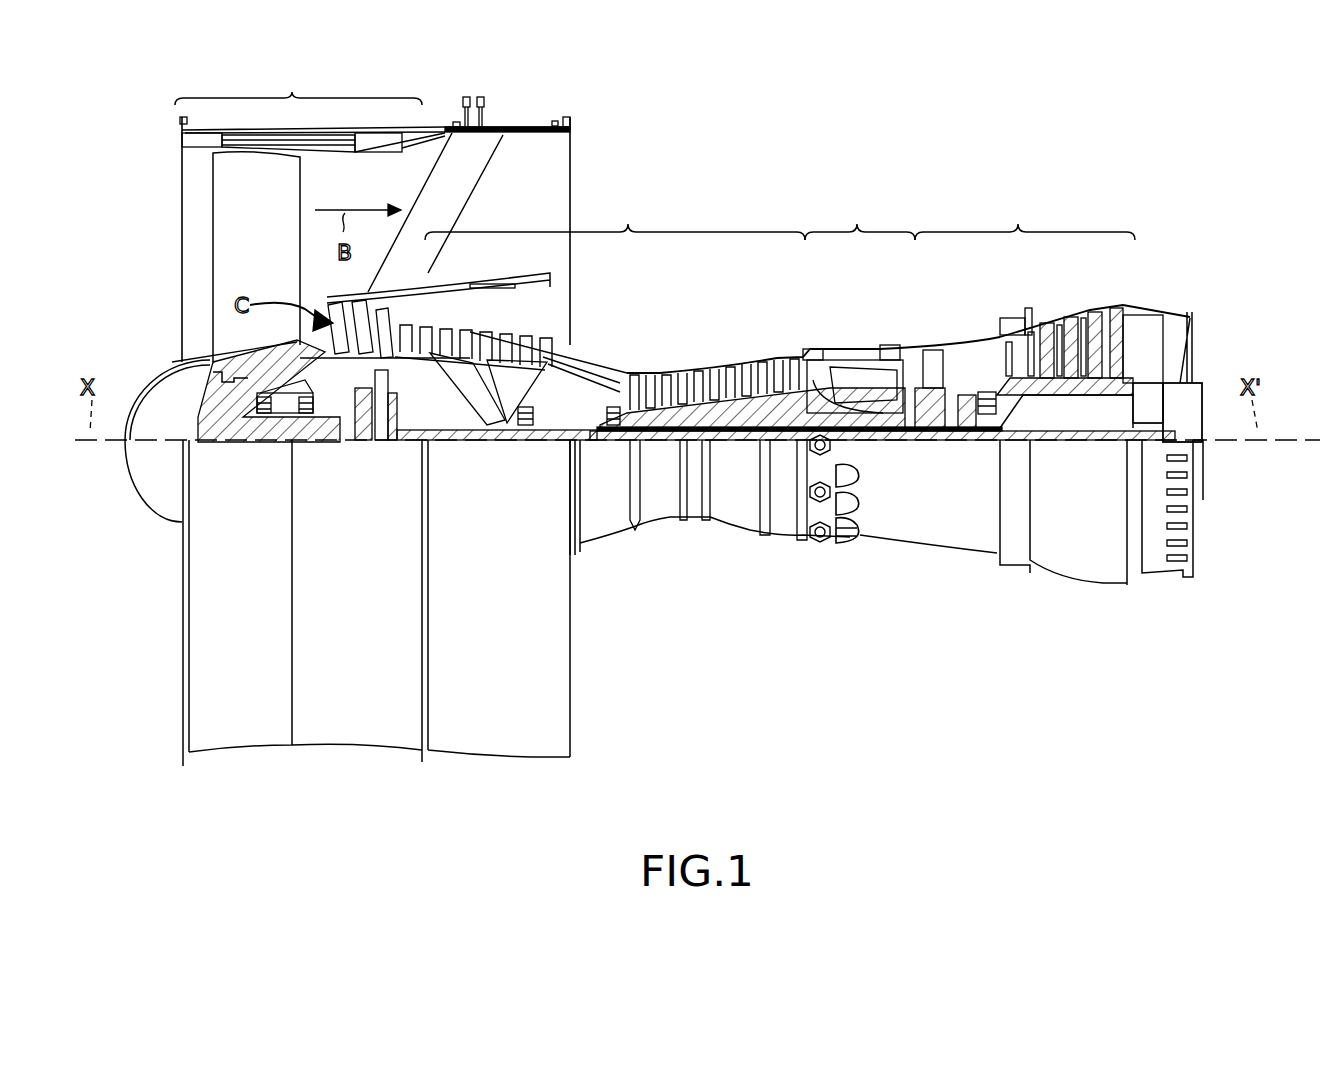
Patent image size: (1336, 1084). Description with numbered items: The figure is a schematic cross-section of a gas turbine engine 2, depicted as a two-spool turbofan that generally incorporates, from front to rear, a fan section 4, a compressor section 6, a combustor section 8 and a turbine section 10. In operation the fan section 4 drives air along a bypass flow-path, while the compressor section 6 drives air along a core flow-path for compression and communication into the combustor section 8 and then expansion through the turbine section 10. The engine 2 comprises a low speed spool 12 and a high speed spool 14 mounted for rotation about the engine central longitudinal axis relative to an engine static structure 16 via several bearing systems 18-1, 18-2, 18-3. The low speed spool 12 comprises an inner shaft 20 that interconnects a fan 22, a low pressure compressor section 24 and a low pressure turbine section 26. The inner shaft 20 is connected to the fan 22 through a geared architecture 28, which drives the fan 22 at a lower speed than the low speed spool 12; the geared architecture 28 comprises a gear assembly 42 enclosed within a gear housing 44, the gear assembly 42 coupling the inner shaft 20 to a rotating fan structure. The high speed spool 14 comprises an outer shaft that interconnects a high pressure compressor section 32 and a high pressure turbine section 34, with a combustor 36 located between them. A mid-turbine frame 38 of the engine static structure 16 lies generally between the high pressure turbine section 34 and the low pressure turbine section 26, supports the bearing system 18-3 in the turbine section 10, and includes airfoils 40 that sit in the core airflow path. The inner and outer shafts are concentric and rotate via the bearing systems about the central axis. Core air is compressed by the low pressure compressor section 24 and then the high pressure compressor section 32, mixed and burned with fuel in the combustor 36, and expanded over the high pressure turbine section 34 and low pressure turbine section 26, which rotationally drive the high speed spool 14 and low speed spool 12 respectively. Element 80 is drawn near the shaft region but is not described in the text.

The gas turbine engine 2 is at (912, 161).
The fan section 4 is at (292, 98).
The compressor section 6 is at (629, 230).
The combustor section 8 is at (858, 230).
The turbine section 10 is at (1019, 230).
The low speed spool 12 is at (745, 453).
The high speed spool 14 is at (777, 407).
The engine static structure 16 is at (355, 722).
The bearing system 18-1 is at (268, 417).
The bearing system 18-2 is at (522, 440).
The bearing system 18-3 is at (975, 440).
The inner shaft 20 is at (598, 445).
The fan 22 is at (265, 258).
The low pressure compressor section 24 is at (503, 333).
The low pressure turbine section 26 is at (1058, 332).
The geared architecture 28 is at (386, 463).
The high pressure compressor section 32 is at (722, 406).
The high pressure turbine section 34 is at (933, 358).
The combustor 36 is at (858, 378).
The mid-turbine frame 38 is at (967, 420).
The airfoils 40 is at (987, 412).
The gear assembly 42 is at (394, 420).
The gear housing 44 is at (392, 393).
The fuel nozzle 80 is at (860, 428).